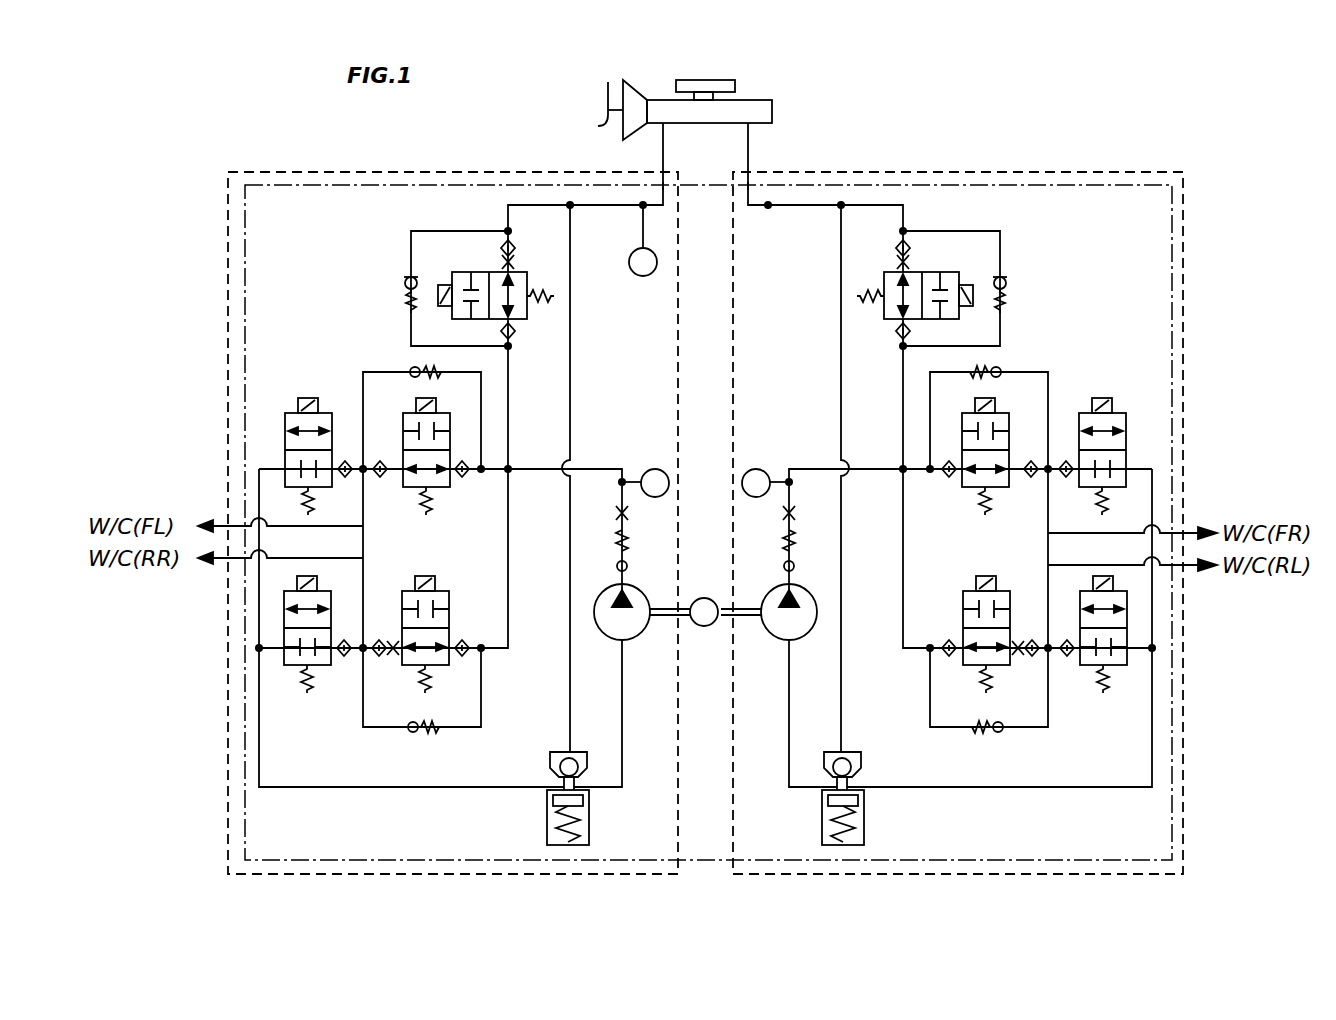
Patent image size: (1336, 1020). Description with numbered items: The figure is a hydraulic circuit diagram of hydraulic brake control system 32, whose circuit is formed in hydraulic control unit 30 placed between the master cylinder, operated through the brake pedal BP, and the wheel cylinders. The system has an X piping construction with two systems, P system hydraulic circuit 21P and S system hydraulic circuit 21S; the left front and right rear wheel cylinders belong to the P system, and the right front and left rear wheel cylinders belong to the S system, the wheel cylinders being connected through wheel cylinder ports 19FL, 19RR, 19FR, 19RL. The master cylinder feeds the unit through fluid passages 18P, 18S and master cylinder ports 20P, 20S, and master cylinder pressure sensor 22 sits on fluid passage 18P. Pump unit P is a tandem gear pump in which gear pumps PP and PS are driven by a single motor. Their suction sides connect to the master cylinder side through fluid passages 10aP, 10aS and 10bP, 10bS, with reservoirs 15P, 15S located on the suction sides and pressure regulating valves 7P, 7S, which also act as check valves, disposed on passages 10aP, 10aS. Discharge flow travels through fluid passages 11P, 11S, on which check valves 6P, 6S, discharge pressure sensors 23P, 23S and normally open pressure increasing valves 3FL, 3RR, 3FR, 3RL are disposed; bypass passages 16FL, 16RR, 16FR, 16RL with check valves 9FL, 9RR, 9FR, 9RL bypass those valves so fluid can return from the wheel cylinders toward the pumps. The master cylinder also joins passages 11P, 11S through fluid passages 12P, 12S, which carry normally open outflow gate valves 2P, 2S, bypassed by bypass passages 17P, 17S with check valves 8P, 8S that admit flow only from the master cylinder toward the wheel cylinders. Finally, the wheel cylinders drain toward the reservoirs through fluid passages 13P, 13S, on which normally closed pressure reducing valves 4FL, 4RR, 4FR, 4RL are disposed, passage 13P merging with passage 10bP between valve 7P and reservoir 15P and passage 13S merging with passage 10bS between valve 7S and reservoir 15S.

The brake pedal BP is at (588, 138).
The hydraulic control unit 30 is at (1108, 185).
The hydraulic brake control system 32 is at (981, 163).
The P system hydraulic circuit 21P is at (292, 172).
The S system hydraulic circuit 21S is at (1047, 172).
The fluid passage 18P is at (508, 203).
The fluid passage 18S is at (878, 203).
The master cylinder port 20P is at (662, 186).
The master cylinder port 20S is at (750, 186).
The master cylinder pressure sensor 22 is at (646, 277).
The fluid passage 10aP is at (572, 327).
The fluid passage 10aS is at (841, 327).
The bypass passage 17P is at (411, 240).
The bypass passage 17S is at (1002, 240).
The check valve 8P is at (405, 280).
The check valve 8S is at (1008, 280).
The outflow gate valve 2P is at (514, 272).
The outflow gate valve 2S is at (898, 272).
The fluid passage 12P is at (508, 400).
The fluid passage 12S is at (903, 395).
The bypass passage 16FL is at (365, 372).
The bypass passage 16FR is at (1046, 372).
The bypass passage 16RR is at (475, 727).
The bypass passage 16RL is at (940, 727).
The check valve 9FL is at (413, 368).
The check valve 9FR is at (1000, 368).
The check valve 9RR is at (410, 730).
The check valve 9RL is at (1000, 730).
The pressure reducing valve 4FL is at (300, 412).
The pressure reducing valve 4FR is at (1110, 412).
The pressure reducing valve 4RR is at (290, 666).
The pressure reducing valve 4RL is at (1118, 666).
The pressure increasing valve 3FL is at (415, 488).
The pressure increasing valve 3FR is at (995, 488).
The pressure increasing valve 3RR is at (410, 590).
The pressure increasing valve 3RL is at (1015, 575).
The wheel cylinder port 19FL is at (250, 522).
The wheel cylinder port 19FR is at (1170, 530).
The wheel cylinder port 19RR is at (250, 562).
The wheel cylinder port 19RL is at (1170, 568).
The fluid passage 13P is at (300, 787).
The fluid passage 13S is at (1110, 787).
The pressure regulating valve 7P is at (565, 752).
The pressure regulating valve 7S is at (850, 752).
The reservoir 15P is at (547, 812).
The reservoir 15S is at (863, 812).
The fluid passage 10bP is at (605, 788).
The fluid passage 10bS is at (805, 788).
The fluid passage 11P is at (610, 468).
The fluid passage 11S is at (800, 468).
The discharge pressure sensor 23P is at (655, 469).
The discharge pressure sensor 23S is at (757, 469).
The check valve 6P is at (617, 578).
The check valve 6S is at (795, 578).
The gear pump PP is at (648, 590).
The gear pump PS is at (760, 590).
The pump unit P is at (703, 600).